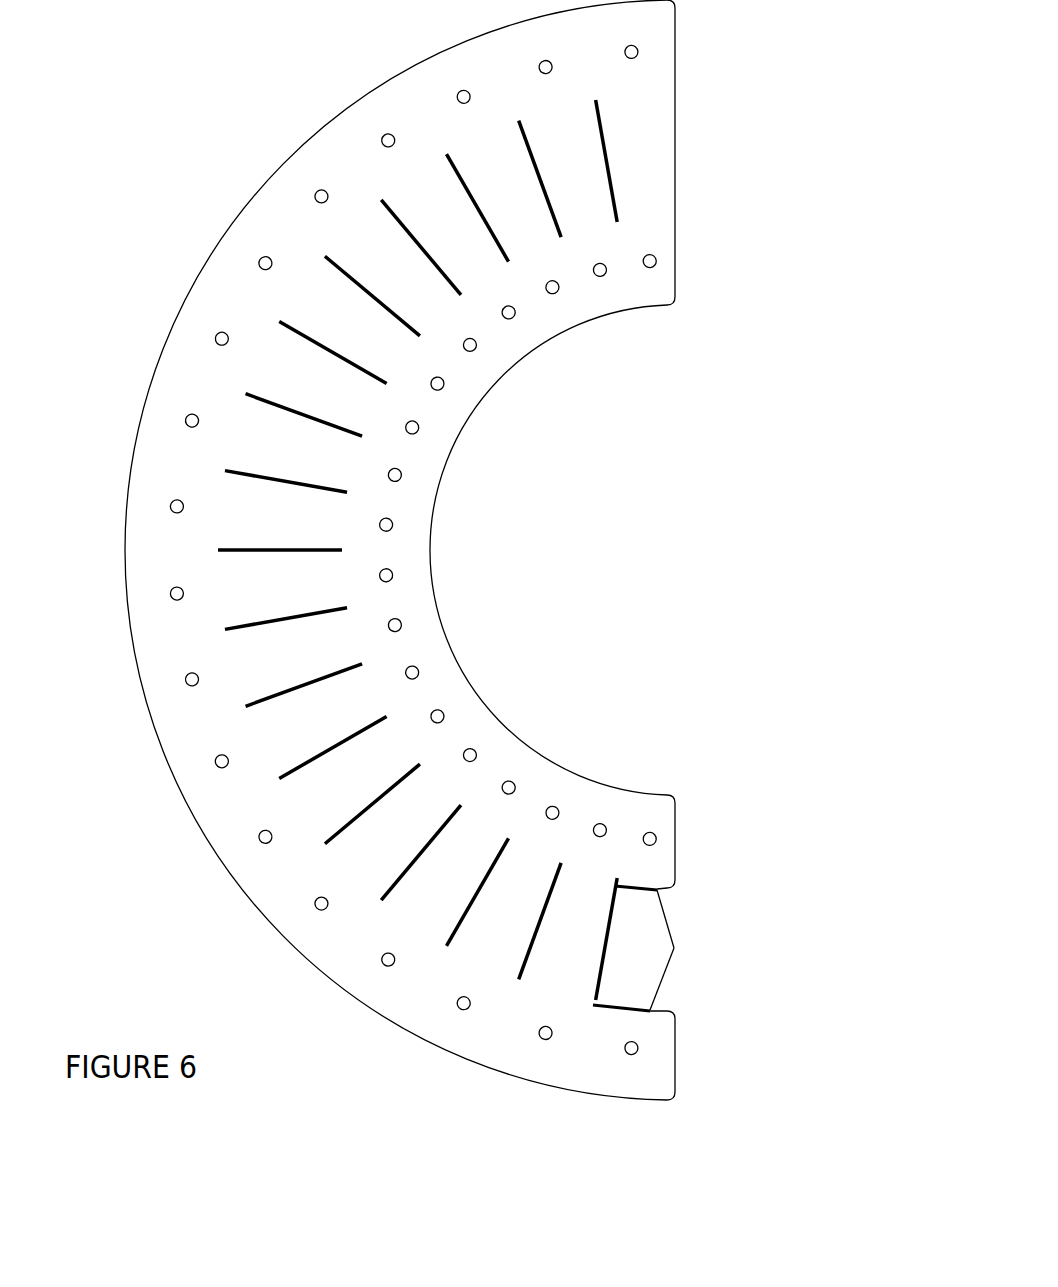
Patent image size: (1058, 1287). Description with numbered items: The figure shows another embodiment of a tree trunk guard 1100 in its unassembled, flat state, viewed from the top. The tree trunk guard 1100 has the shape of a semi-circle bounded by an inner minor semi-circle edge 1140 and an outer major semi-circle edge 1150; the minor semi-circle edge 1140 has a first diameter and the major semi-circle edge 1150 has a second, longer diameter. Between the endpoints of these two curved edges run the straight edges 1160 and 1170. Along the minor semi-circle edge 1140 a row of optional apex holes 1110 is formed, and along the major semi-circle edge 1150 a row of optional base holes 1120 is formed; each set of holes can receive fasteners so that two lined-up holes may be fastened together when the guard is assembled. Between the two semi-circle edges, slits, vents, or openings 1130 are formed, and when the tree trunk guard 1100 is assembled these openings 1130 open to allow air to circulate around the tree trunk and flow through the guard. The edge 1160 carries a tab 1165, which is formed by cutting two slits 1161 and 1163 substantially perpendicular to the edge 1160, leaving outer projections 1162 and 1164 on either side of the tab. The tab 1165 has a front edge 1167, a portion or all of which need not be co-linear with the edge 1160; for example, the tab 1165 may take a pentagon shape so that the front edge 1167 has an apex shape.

The tree trunk guard 1100 is at (136, 29).
The apex holes 1110 is at (505, 318).
The base holes 1120 is at (183, 415).
The slits, vents, or openings 1130 is at (440, 160).
The minor semi-circle edge 1140 is at (432, 518).
The major semi-circle edge 1150 is at (190, 290).
The edge 1160 is at (764, 947).
The slit 1161 is at (645, 888).
The outer projection 1162 is at (682, 825).
The slit 1163 is at (643, 1012).
The outer projection 1164 is at (716, 1077).
The tab 1165 is at (640, 938).
The front edge 1167 is at (675, 968).
The edge 1170 is at (682, 218).